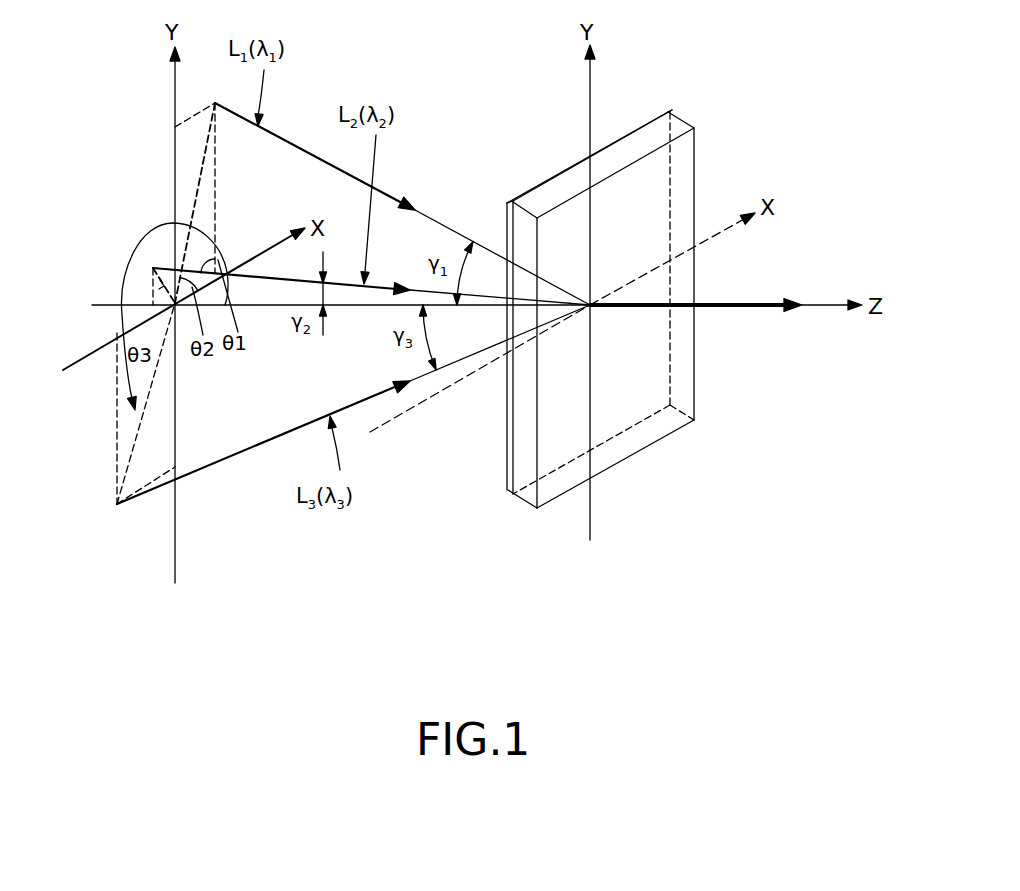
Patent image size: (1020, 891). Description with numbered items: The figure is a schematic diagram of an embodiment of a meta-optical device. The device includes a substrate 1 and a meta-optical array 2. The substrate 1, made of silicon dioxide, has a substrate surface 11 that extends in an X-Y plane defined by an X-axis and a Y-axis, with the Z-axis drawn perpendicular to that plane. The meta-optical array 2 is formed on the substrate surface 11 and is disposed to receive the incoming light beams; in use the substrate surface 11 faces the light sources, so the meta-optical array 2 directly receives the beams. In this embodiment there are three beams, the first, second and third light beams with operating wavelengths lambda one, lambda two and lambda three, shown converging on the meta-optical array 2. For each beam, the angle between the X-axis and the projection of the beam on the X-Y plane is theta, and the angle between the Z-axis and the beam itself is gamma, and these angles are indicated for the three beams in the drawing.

The substrate 1 is at (576, 356).
The substrate surface 11 is at (510, 495).
The meta-optical array 2 is at (503, 460).